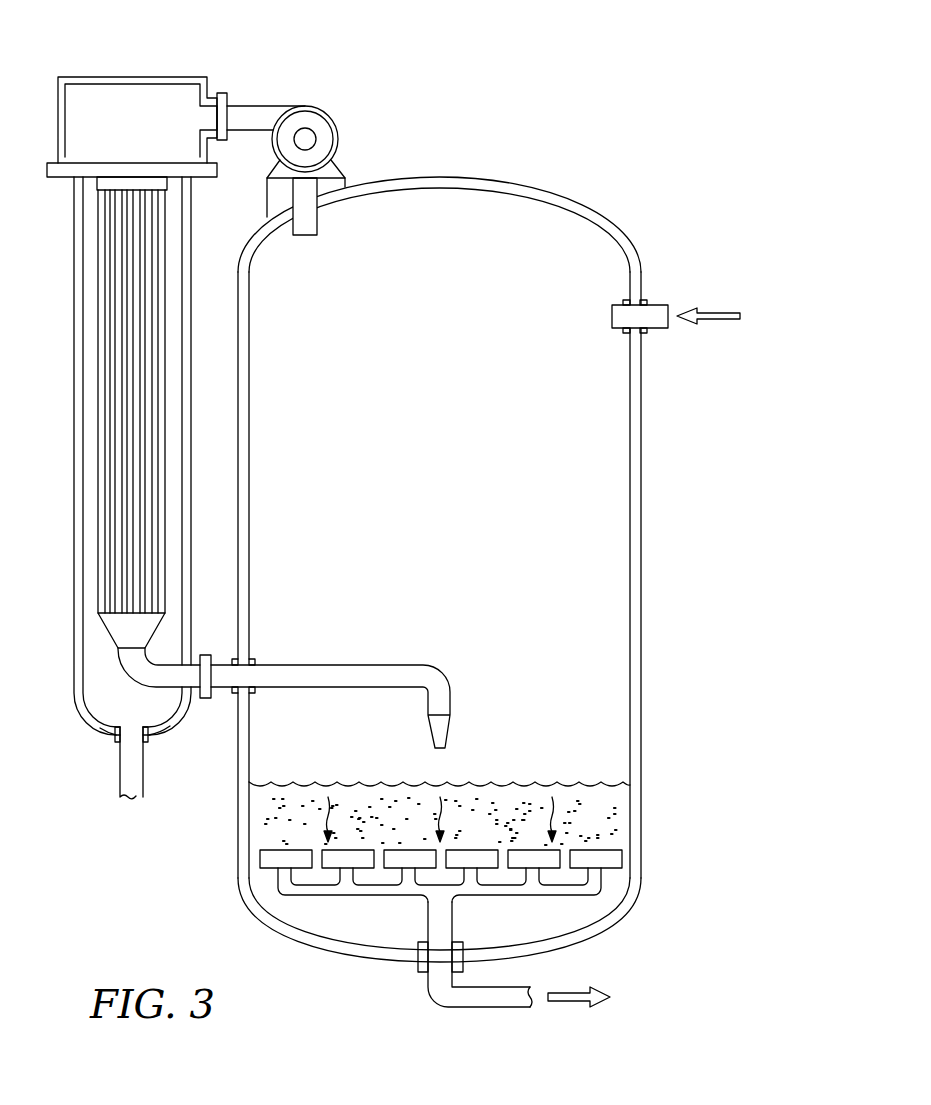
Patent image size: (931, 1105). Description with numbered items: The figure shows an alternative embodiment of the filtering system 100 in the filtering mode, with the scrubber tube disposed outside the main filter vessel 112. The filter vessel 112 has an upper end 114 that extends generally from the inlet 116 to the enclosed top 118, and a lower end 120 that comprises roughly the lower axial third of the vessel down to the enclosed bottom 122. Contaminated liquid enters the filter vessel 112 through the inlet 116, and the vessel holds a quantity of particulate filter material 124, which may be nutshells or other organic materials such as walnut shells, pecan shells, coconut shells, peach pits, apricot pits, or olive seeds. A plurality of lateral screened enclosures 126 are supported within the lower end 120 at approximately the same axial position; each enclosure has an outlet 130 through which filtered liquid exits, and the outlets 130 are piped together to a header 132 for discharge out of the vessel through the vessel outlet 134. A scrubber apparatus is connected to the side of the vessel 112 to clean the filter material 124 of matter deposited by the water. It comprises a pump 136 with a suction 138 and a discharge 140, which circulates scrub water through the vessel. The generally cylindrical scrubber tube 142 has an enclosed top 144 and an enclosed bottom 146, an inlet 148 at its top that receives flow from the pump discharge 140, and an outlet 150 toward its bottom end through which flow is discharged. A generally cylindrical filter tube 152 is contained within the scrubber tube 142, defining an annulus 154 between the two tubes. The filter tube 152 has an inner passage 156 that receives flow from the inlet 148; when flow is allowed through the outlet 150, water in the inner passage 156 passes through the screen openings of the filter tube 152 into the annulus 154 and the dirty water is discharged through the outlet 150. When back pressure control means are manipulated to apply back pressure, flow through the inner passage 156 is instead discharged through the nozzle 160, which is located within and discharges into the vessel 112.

The filtering system 100 is at (608, 176).
The filter vessel 112 is at (649, 452).
The upper end 114 is at (648, 237).
The inlet 116 is at (677, 307).
The enclosed top 118 is at (497, 183).
The lower end 120 is at (649, 750).
The enclosed bottom 122 is at (613, 917).
The particulate filter material 124 is at (610, 812).
The lateral screened enclosure 126 is at (613, 853).
The outlet 130 is at (583, 873).
The header 132 is at (313, 890).
The vessel outlet 134 is at (433, 993).
The pump 136 is at (330, 104).
The suction 138 is at (307, 222).
The discharge 140 is at (248, 112).
The scrubber tube 142 is at (73, 372).
The enclosed top 144 is at (88, 77).
The enclosed bottom 146 is at (100, 735).
The inlet 148 is at (203, 113).
The outlet 150 is at (135, 768).
The filter tube 152 is at (98, 430).
The annulus 154 is at (88, 473).
The inner passage 156 is at (130, 165).
The nozzle 160 is at (443, 727).